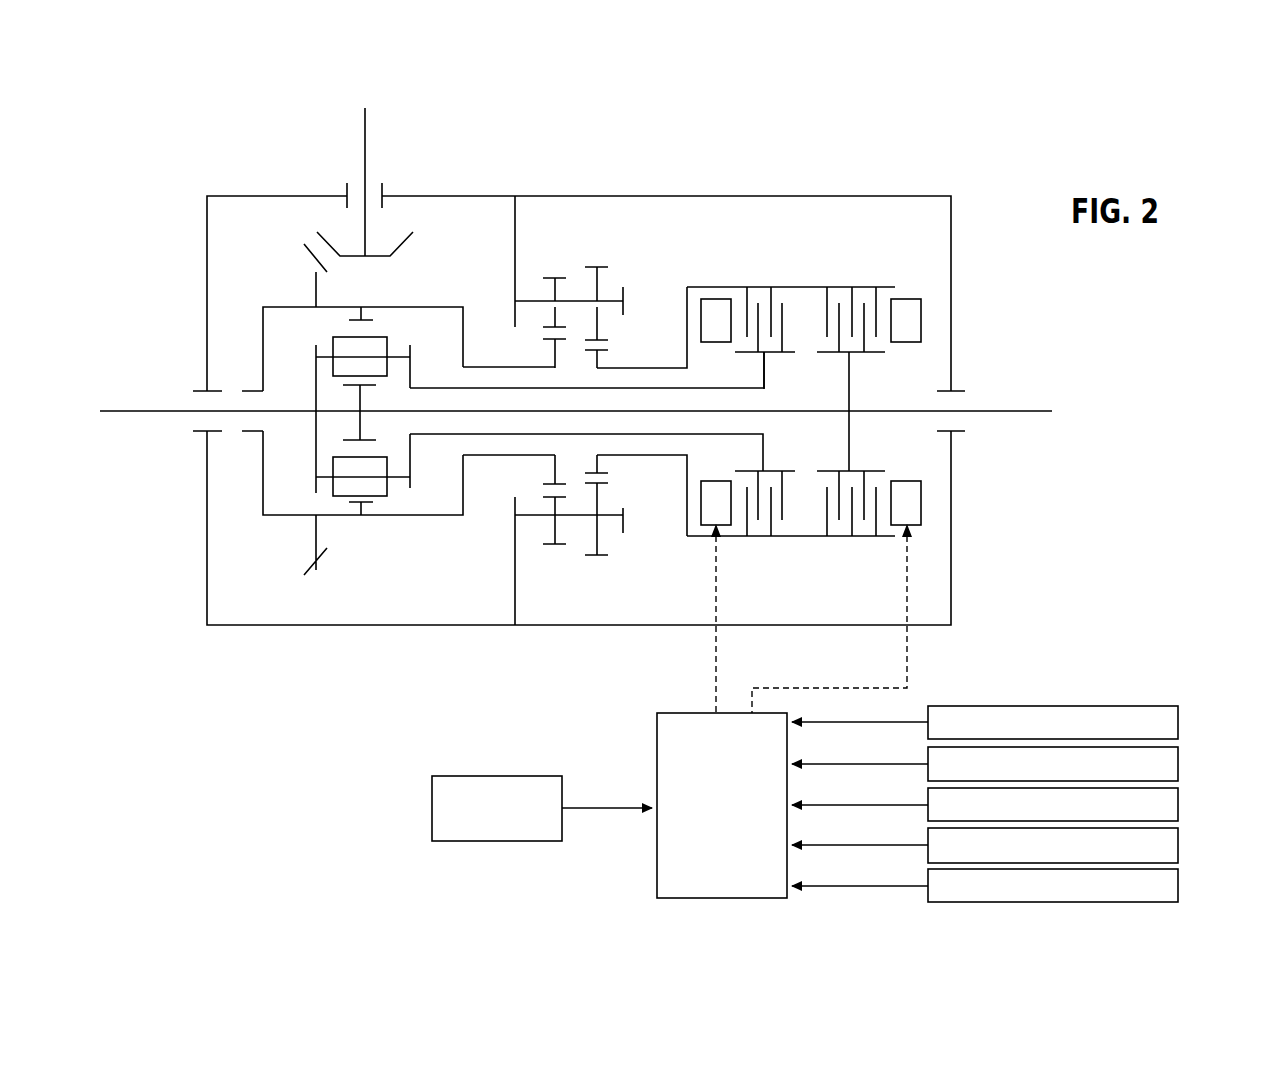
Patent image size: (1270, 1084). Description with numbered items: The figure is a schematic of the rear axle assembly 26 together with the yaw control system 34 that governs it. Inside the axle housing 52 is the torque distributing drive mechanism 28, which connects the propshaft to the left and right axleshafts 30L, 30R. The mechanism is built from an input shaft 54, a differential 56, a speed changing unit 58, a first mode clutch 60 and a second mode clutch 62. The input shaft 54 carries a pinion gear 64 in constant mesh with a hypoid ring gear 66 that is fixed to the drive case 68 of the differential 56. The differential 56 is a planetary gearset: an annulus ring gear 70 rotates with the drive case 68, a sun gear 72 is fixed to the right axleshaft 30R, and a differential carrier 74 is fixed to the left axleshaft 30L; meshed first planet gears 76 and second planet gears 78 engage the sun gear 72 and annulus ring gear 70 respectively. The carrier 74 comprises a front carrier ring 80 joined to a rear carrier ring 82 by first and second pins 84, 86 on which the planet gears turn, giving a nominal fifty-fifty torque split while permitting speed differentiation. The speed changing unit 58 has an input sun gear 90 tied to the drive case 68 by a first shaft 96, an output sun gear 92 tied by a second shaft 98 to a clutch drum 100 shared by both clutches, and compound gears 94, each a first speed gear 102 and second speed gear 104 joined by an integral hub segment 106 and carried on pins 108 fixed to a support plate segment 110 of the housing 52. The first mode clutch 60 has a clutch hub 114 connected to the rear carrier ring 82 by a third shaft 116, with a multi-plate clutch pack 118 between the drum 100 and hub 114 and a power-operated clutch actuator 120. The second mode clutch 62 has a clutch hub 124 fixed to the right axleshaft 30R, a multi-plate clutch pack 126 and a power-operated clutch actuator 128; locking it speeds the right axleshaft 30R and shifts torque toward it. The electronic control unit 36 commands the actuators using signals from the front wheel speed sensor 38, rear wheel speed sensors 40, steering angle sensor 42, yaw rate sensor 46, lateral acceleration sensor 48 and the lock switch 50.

The rear axle assembly 26 is at (906, 100).
The torque distributing drive mechanism 28 is at (758, 160).
The left axleshaft 30L is at (125, 408).
The right axleshaft 30R is at (1012, 410).
The yaw control system 34 is at (610, 852).
The electronic control unit 36 is at (670, 740).
The front wheel speed sensor 38 is at (1178, 720).
The rear wheel speed sensors 40 is at (1178, 762).
The steering angle sensor 42 is at (1178, 803).
The yaw rate sensor 46 is at (1178, 844).
The lateral acceleration sensor 48 is at (1178, 886).
The lock switch 50 is at (432, 796).
The axle housing 52 is at (951, 228).
The input shaft 54 is at (367, 148).
The differential 56 is at (400, 542).
The speed changing unit 58 is at (581, 294).
The first mode clutch 60 is at (752, 280).
The second mode clutch 62 is at (871, 278).
The pinion gear 64 is at (415, 240).
The hypoid ring gear 66 is at (318, 556).
The drive case 68 is at (398, 308).
The annulus ring gear 70 is at (370, 516).
The sun gear 72 is at (363, 420).
The differential carrier 74 is at (310, 360).
The first planet gears 76 is at (380, 345).
The second planet gears 78 is at (385, 490).
The front carrier ring 80 is at (316, 442).
The rear carrier ring 82 is at (412, 370).
The first pins 84 is at (328, 355).
The second pins 86 is at (325, 482).
The input sun gear 90 is at (558, 470).
The output sun gear 92 is at (600, 464).
The compound gears 94 is at (580, 294).
The first shaft 96 is at (483, 366).
The second shaft 98 is at (650, 367).
The clutch drum 100 is at (800, 284).
The first speed gear 102 is at (555, 538).
The second speed gear 104 is at (600, 540).
The integral hub segment 106 is at (575, 520).
The pins 108 is at (610, 297).
The support plate segment 110 is at (515, 226).
The clutch hub 114 is at (765, 370).
The third shaft 116 is at (577, 390).
The multi-plate clutch pack 118 is at (777, 505).
The power-operated clutch actuator 120 is at (715, 307).
The clutch hub 124 is at (851, 380).
The multi-plate clutch pack 126 is at (850, 518).
The power-operated clutch actuator 128 is at (912, 318).